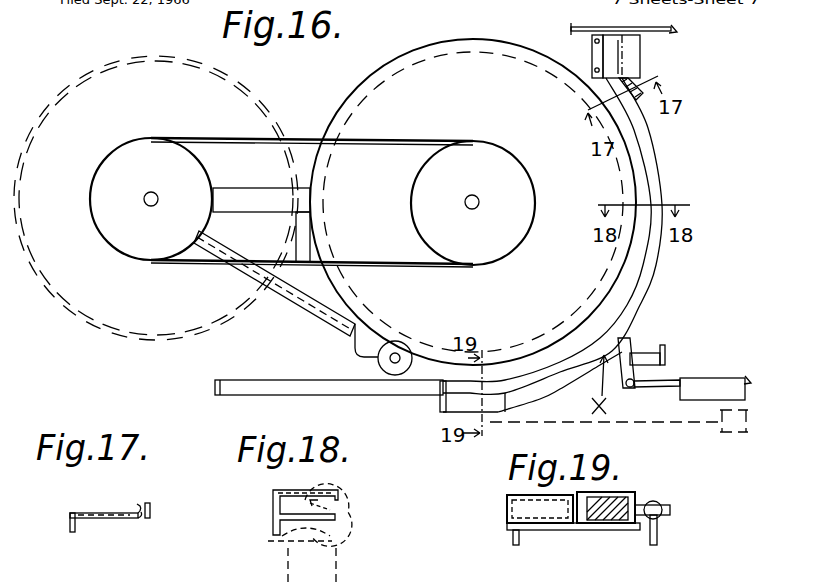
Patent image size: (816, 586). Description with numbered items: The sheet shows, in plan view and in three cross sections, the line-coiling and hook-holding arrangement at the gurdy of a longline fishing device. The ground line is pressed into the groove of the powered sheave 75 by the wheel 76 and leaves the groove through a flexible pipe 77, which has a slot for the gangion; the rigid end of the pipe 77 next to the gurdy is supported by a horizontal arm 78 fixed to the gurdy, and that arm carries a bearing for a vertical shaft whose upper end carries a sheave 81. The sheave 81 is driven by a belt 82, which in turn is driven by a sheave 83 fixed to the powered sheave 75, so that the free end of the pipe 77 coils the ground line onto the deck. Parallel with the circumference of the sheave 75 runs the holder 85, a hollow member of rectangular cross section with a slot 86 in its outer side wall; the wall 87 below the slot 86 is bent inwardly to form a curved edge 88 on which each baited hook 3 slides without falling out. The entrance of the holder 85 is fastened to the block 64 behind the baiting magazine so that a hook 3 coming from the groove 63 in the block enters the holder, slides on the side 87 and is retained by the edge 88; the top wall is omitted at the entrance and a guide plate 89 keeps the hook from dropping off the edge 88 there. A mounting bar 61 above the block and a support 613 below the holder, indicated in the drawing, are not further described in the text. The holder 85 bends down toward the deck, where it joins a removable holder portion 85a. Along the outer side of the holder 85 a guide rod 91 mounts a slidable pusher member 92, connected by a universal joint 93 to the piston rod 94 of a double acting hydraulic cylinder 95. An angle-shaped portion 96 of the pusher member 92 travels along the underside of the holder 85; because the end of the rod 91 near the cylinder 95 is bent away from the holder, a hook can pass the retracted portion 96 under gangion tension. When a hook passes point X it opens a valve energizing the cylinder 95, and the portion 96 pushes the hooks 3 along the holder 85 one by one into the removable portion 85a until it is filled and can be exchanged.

In FIG. 18, the baited hook 3 is at (350, 533).
In FIG. 16, the mounting bar 61 is at (571, 28).
In FIG. 16, the groove 63 is at (592, 46).
In FIG. 16, the block 64 is at (640, 50).
In FIG. 16, the powered sheave 75 is at (354, 101).
In FIG. 16, the wheel 76 is at (379, 361).
In FIG. 16, the flexible pipe 77 is at (274, 283).
In FIG. 16, the arm 78 is at (237, 196).
In FIG. 16, the sheave 81 is at (111, 160).
In FIG. 16, the belt 82 is at (373, 147).
In FIG. 16, the sheave 83 is at (498, 152).
In FIG. 16, the holder 85 is at (660, 193).
In FIG. 17, the holder 85 is at (70, 514).
In FIG. 18, the holder 85 is at (273, 494).
In FIG. 16, the removable holder portion 85a is at (278, 382).
In FIG. 18, the slot 86 is at (333, 501).
In FIG. 19, the slot 86 is at (562, 509).
In FIG. 17, the wall 87 is at (134, 521).
In FIG. 16, the curved edge 88 is at (588, 110).
In FIG. 17, the curved edge 88 is at (137, 509).
In FIG. 16, the guide plate 89 is at (641, 85).
In FIG. 17, the guide plate 89 is at (151, 510).
In FIG. 16, the guide rod 91 is at (548, 392).
In FIG. 19, the guide rod 91 is at (612, 521).
In FIG. 16, the pusher member 92 is at (640, 356).
In FIG. 19, the pusher member 92 is at (583, 524).
In FIG. 19, the universal joint 93 is at (664, 506).
In FIG. 16, the piston rod 94 is at (655, 388).
In FIG. 19, the piston rod 94 is at (659, 541).
In FIG. 16, the double acting hydraulic cylinder 95 is at (742, 378).
In FIG. 16, the angle-shaped portion 96 is at (632, 346).
In FIG. 19, the angle-shaped portion 96 is at (540, 530).
In FIG. 18, the support 613 is at (333, 577).